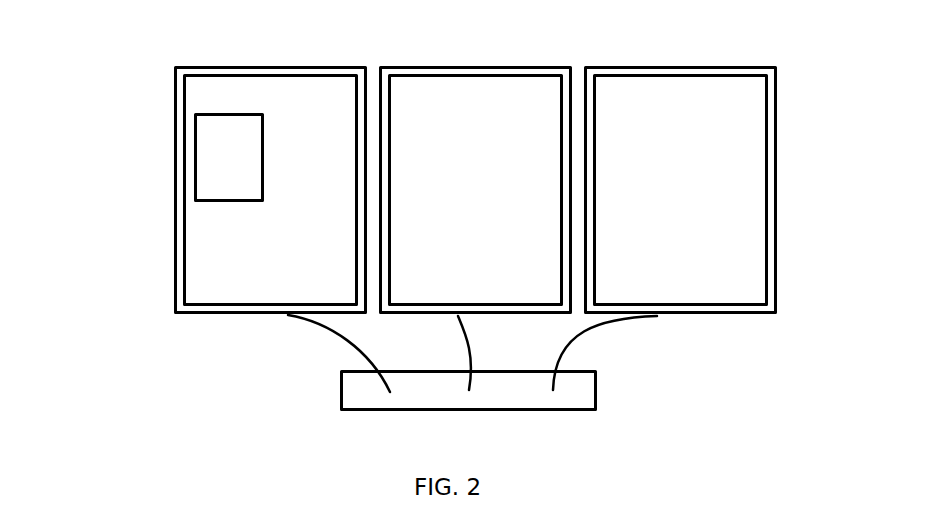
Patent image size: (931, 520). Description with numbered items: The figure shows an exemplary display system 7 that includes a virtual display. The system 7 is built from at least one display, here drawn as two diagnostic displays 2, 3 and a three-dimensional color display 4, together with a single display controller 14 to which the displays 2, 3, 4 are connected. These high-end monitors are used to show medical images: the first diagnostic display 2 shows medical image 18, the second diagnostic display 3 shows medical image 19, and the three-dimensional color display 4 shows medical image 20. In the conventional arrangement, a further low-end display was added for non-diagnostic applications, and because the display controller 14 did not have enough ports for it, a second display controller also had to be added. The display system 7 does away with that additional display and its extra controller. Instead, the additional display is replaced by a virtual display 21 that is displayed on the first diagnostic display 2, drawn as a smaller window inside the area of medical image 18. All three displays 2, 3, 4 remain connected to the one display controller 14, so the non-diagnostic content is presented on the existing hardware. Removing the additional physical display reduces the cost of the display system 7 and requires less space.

The display system 7 is at (128, 58).
The diagnostic display 2 is at (215, 65).
The medical image 18 is at (306, 99).
The virtual display 21 is at (265, 165).
The diagnostic display 3 is at (430, 65).
The medical image 19 is at (507, 99).
The 3D color display 4 is at (633, 65).
The medical image 20 is at (737, 103).
The display controller 14 is at (597, 388).